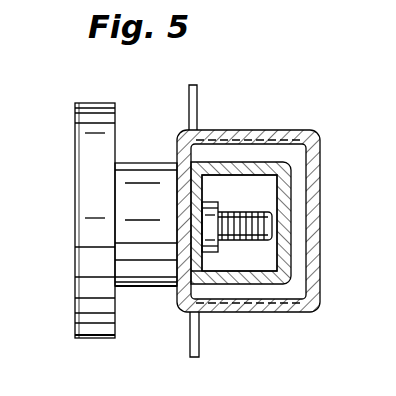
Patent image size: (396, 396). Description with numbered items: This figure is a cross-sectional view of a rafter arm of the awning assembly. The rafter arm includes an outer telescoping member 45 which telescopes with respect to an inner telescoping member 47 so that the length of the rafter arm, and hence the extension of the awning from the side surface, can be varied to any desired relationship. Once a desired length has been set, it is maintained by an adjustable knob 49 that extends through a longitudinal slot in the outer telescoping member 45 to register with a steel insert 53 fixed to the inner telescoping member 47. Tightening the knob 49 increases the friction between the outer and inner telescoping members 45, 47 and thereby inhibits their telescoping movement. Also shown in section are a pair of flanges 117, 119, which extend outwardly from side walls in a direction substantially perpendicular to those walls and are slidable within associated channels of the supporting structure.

The outer telescoping member 45 is at (178, 178).
The inner telescoping member 47 is at (226, 168).
The adjustable knob 49 is at (100, 110).
The steel insert 53 is at (218, 202).
The flange 117 is at (186, 100).
The flange 119 is at (189, 325).